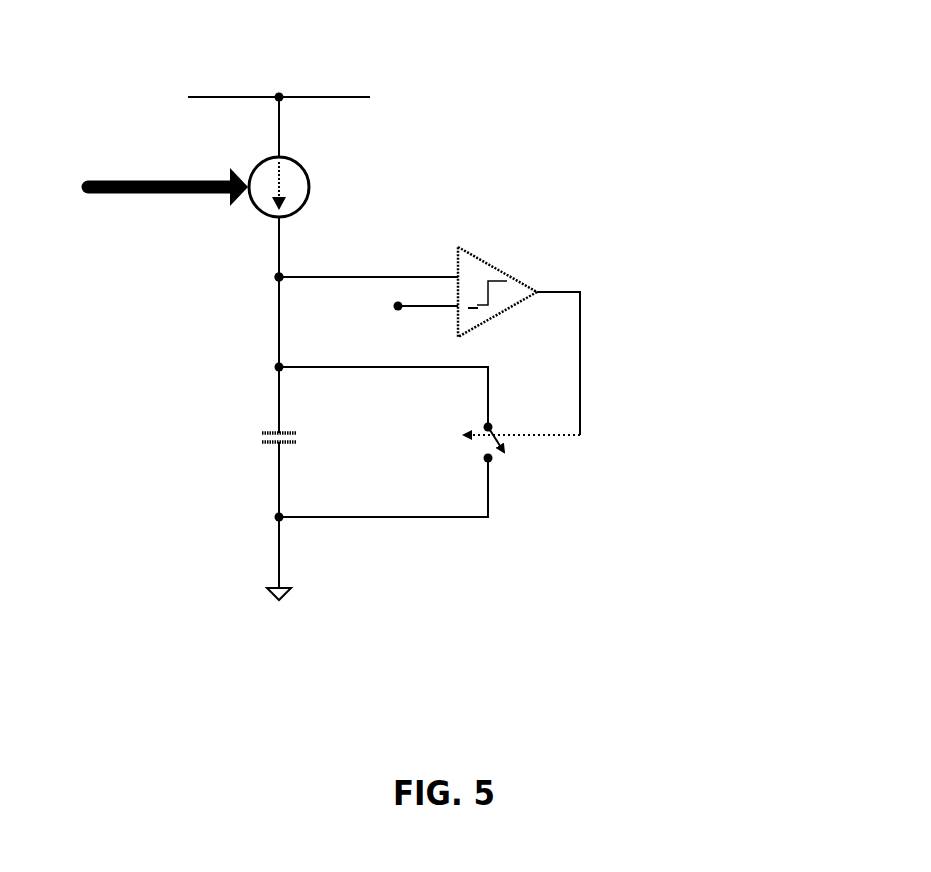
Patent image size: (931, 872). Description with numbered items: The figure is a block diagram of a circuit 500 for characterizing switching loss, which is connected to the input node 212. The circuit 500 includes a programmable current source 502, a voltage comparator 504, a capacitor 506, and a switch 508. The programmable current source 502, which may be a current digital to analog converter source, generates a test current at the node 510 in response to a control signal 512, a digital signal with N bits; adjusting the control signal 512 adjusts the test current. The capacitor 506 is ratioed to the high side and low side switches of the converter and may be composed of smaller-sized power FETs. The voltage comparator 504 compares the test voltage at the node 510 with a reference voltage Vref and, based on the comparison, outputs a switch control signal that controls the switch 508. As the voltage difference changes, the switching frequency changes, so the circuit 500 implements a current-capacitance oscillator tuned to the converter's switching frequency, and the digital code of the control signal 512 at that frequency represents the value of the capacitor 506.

The circuit 500 is at (761, 677).
The input node 212 is at (297, 79).
The programmable current source 502 is at (328, 170).
The voltage comparator 504 is at (523, 268).
The capacitor 506 is at (254, 460).
The switch 508 is at (470, 455).
The node 510 is at (262, 290).
The control signal 512 is at (140, 178).